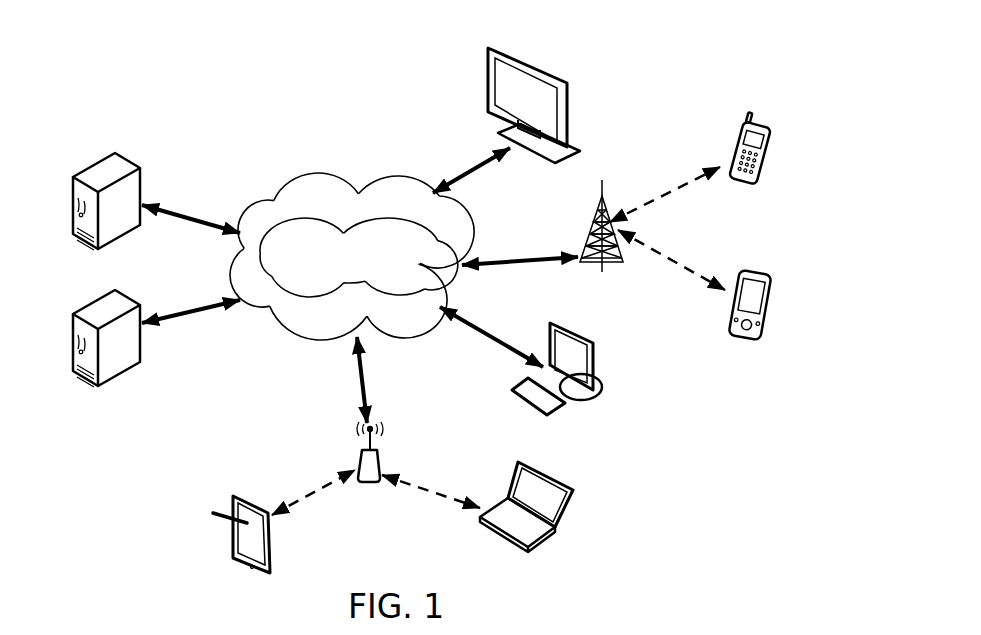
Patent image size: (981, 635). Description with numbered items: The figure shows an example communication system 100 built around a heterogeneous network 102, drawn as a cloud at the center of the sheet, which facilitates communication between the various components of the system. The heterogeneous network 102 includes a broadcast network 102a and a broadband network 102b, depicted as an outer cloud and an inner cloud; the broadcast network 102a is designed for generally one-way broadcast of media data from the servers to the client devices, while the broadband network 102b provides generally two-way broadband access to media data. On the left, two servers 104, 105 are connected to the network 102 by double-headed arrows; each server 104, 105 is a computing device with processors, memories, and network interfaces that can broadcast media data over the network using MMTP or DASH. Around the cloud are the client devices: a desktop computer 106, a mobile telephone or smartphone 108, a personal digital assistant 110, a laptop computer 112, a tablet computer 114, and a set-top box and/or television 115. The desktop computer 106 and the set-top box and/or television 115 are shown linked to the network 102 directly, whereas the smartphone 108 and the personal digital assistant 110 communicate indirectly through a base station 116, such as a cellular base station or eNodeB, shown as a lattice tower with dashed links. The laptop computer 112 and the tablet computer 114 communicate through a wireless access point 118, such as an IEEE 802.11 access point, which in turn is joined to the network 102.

The communication system 100 is at (202, 70).
The heterogeneous network 102 is at (252, 163).
The broadcast network 102a is at (316, 174).
The broadband network 102b is at (290, 332).
The server 104 is at (98, 163).
The server 105 is at (85, 305).
The desktop computer 106 is at (603, 397).
The mobile telephone or smartphone 108 is at (768, 140).
The personal digital assistant (PDA) 110 is at (763, 287).
The laptop computer 112 is at (550, 540).
The tablet computer 114 is at (230, 507).
The set-top box and/or television 115 is at (572, 107).
The base station 116 is at (622, 262).
The wireless access point 118 is at (378, 462).